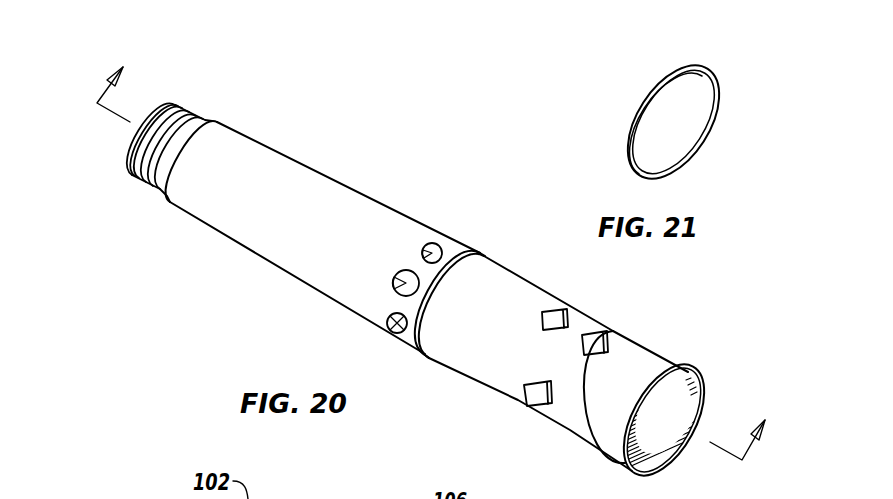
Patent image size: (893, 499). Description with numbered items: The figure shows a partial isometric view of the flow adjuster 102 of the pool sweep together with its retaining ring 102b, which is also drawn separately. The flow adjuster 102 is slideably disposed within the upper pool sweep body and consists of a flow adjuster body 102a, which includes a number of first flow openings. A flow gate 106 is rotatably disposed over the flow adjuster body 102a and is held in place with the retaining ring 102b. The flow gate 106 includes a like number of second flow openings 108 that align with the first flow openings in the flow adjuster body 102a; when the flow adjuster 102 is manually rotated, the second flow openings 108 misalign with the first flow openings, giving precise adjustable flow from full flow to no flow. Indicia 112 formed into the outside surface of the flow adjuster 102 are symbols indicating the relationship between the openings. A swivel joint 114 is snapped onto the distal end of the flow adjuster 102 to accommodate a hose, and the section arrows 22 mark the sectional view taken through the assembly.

In FIG. 20, the flow adjuster 102 is at (377, 294).
In FIG. 20, the flow adjuster body 102a is at (293, 277).
In FIG. 20, the retaining ring 102b is at (427, 355).
In FIG. 21, the retaining ring 102b is at (717, 73).
In FIG. 20, the flow gate 106 is at (541, 412).
In FIG. 20, the second flow openings 108 is at (612, 333).
In FIG. 20, the indicia 112 is at (443, 248).
In FIG. 20, the swivel joint 114 is at (145, 183).
In FIG. 20, the section line for FIG. 22 is at (440, 245).